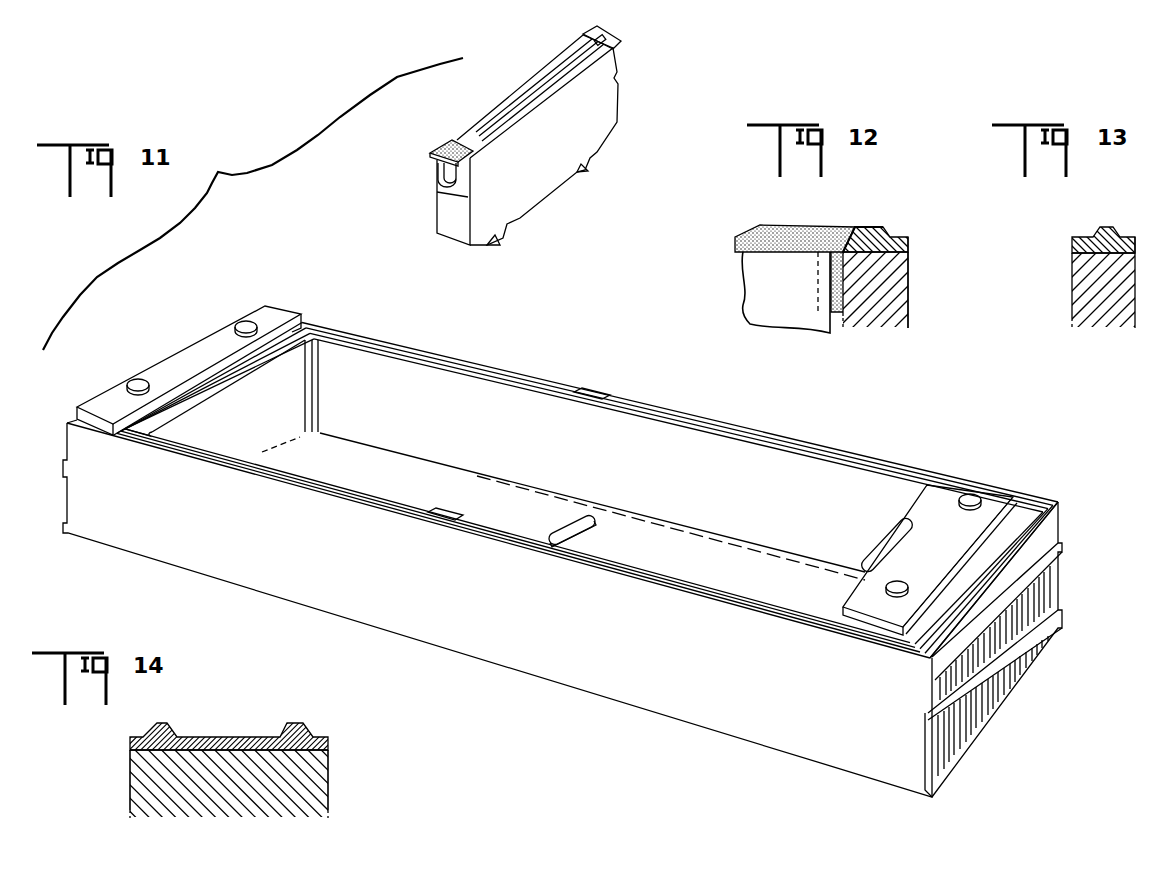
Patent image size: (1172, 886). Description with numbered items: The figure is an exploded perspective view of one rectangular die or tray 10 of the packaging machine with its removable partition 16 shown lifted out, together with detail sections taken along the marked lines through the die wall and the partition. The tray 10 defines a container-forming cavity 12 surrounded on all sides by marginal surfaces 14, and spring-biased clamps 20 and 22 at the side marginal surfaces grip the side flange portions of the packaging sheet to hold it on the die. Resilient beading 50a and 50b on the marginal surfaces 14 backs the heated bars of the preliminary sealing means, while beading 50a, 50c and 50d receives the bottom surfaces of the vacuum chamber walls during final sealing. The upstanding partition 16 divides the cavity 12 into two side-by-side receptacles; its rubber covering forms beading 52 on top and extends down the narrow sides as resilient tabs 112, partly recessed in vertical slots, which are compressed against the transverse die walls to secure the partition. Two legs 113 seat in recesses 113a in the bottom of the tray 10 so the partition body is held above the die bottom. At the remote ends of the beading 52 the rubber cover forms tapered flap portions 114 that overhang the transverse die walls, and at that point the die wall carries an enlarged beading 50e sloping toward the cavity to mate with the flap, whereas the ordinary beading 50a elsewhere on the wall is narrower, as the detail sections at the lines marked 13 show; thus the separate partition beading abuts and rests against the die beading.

In FIG. 11, the tray 10 is at (556, 690).
In FIG. 12, the tray 10 is at (915, 304).
In FIG. 13, the tray 10 is at (1066, 292).
In FIG. 11, the container-forming cavity 12 is at (394, 380).
In FIG. 11, the section line 13 is at (801, 402).
In FIG. 11, the marginal surfaces 14 is at (294, 322).
In FIG. 12, the marginal surfaces 14 is at (902, 262).
In FIG. 11, the partition 16 is at (603, 98).
In FIG. 12, the partition 16 is at (752, 292).
In FIG. 14, the partition 16 is at (303, 788).
In FIG. 11, the spring-biased clamp 20 is at (104, 401).
In FIG. 11, the spring-biased clamp 22 is at (967, 478).
In FIG. 11, the resilient beading 50a is at (232, 370).
In FIG. 13, the resilient beading 50a is at (1104, 228).
In FIG. 11, the resilient beading 50b is at (883, 534).
In FIG. 11, the resilient beading 50c is at (1027, 493).
In FIG. 11, the resilient beading 50d is at (967, 578).
In FIG. 11, the enlarged beading 50e is at (590, 388).
In FIG. 12, the enlarged beading 50e is at (870, 226).
In FIG. 11, the partition beading 52 is at (567, 70).
In FIG. 12, the partition beading 52 is at (745, 230).
In FIG. 14, the partition beading 52 is at (150, 727).
In FIG. 11, the resilient tabs 112 is at (443, 180).
In FIG. 12, the resilient tabs 112 is at (830, 273).
In FIG. 11, the legs 113 is at (592, 167).
In FIG. 11, the recesses 113a is at (588, 519).
In FIG. 11, the flap portions 114 is at (430, 155).
In FIG. 12, the flap portions 114 is at (853, 226).